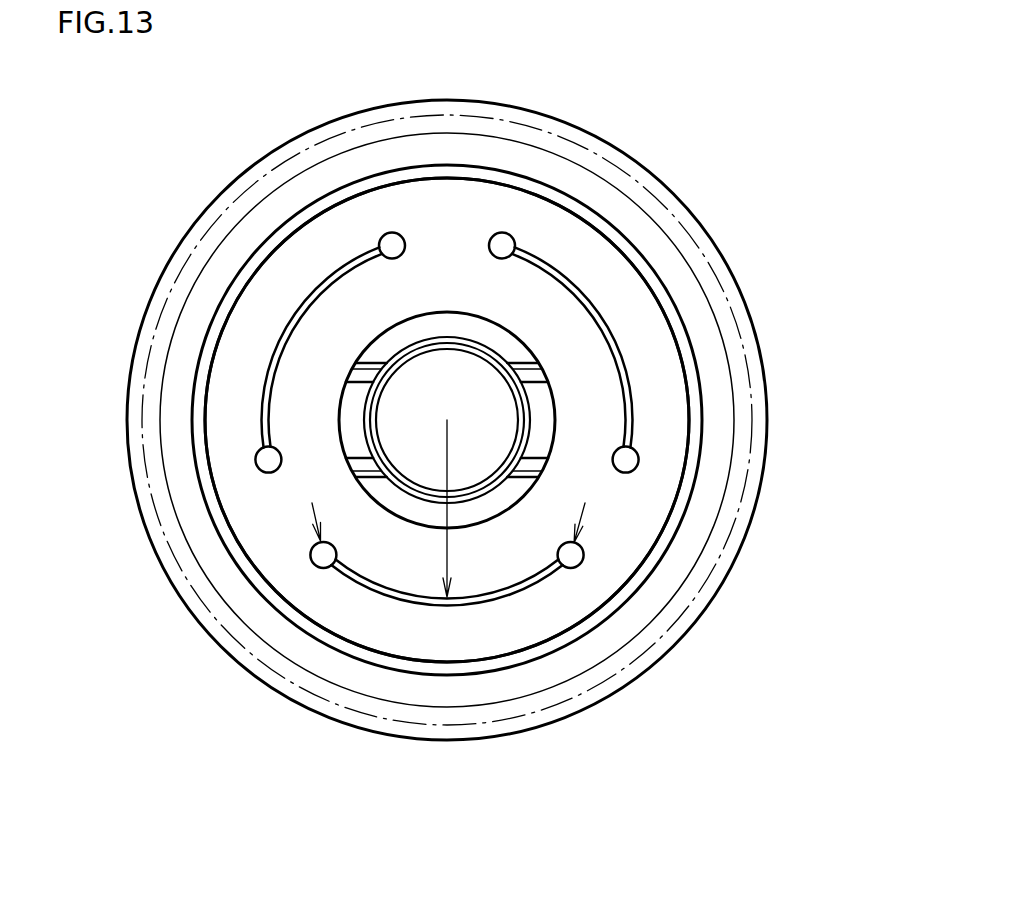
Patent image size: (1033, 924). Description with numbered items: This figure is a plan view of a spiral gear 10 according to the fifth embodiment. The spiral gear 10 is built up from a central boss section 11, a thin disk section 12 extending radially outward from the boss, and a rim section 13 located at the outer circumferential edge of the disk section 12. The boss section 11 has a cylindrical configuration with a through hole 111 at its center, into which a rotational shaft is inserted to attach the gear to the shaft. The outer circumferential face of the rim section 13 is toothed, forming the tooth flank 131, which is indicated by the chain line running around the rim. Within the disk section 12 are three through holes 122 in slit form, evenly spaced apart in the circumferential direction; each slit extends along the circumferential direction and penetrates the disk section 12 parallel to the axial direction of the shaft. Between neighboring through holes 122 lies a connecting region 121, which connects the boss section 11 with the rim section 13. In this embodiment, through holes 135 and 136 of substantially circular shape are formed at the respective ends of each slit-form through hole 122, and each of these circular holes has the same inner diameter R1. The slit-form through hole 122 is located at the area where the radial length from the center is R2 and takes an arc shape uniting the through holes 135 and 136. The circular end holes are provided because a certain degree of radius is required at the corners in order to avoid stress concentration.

The spiral gear 10 is at (626, 95).
The boss section 11 is at (538, 403).
The through hole 111 is at (401, 375).
The disk section 12 is at (655, 483).
The connecting region 121 is at (293, 515).
The through hole 122 is at (600, 350).
The rim section 13 is at (690, 290).
The tooth flank 131 is at (760, 343).
The through hole 135 is at (402, 246).
The through hole 136 is at (491, 246).
The inner diameter R1 is at (307, 557).
The radial length R2 is at (450, 557).